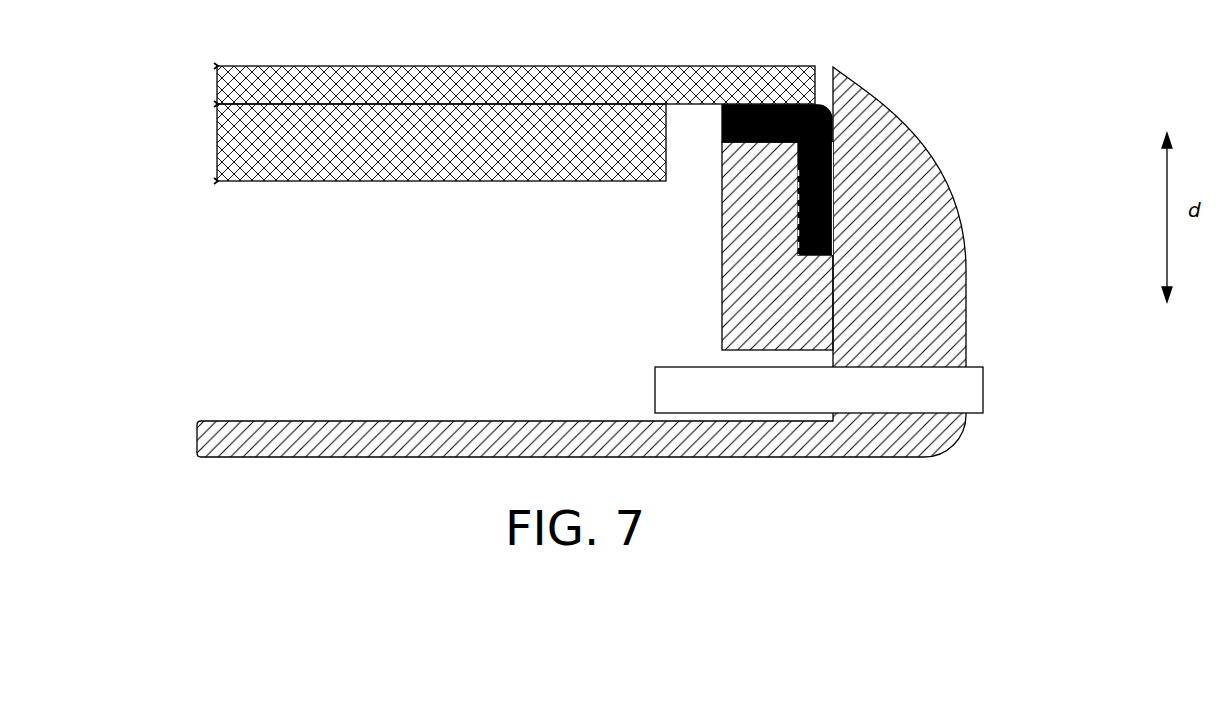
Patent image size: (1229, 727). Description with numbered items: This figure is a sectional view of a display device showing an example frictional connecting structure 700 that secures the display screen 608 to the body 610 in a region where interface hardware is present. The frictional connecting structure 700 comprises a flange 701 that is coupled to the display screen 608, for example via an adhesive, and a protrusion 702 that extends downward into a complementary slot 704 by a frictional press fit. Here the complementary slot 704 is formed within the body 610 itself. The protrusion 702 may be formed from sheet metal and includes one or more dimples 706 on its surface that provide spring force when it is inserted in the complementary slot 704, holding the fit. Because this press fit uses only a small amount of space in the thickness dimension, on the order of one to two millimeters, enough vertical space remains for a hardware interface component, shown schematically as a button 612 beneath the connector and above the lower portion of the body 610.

The display screen 608 is at (197, 68).
The body 610 is at (911, 210).
The button 612 is at (983, 371).
The frictional connecting structure 700 is at (779, 98).
The flange 701 is at (721, 103).
The protrusion 702 is at (797, 147).
The complementary slot 704 is at (791, 249).
The dimples 706 is at (833, 243).